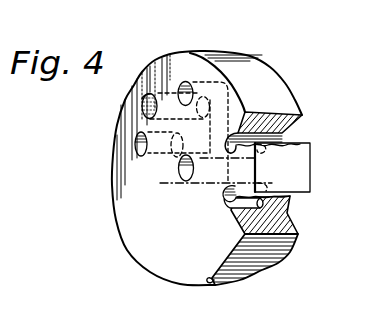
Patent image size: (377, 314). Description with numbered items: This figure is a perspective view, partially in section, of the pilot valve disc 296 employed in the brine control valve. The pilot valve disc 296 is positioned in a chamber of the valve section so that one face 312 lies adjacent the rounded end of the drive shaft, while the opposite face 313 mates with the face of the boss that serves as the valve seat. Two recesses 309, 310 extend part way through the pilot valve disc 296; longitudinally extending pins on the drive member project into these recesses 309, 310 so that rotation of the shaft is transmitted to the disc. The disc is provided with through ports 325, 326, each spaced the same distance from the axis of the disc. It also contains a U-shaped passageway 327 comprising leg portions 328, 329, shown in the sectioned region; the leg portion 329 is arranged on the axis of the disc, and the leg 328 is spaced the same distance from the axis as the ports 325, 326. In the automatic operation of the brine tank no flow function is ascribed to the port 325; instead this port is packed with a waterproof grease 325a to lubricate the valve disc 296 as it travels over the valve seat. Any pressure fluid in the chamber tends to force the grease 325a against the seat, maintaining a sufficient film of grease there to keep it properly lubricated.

The pilot valve disc 296 is at (126, 221).
The recess 309 is at (136, 141).
The recess 310 is at (225, 198).
The face 312 is at (290, 220).
The face 313 is at (213, 283).
The through port 325 is at (142, 108).
The waterproof grease 325a is at (148, 95).
The through port 326 is at (280, 140).
The U-shaped passageway 327 is at (233, 110).
The leg portion 328 is at (187, 82).
The leg portion 329 is at (179, 170).